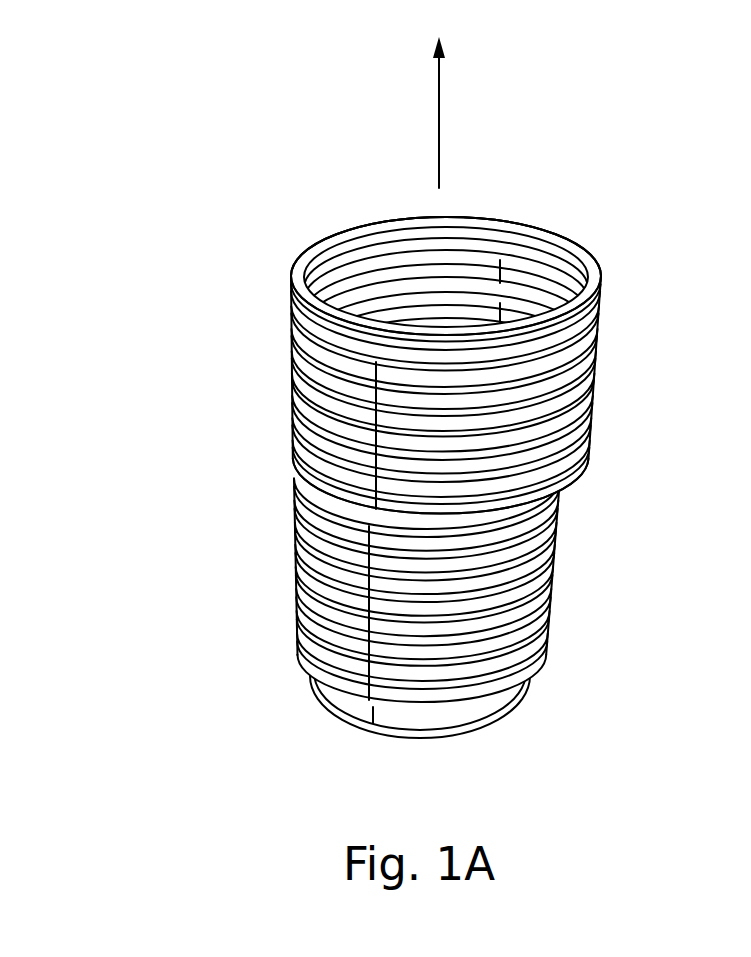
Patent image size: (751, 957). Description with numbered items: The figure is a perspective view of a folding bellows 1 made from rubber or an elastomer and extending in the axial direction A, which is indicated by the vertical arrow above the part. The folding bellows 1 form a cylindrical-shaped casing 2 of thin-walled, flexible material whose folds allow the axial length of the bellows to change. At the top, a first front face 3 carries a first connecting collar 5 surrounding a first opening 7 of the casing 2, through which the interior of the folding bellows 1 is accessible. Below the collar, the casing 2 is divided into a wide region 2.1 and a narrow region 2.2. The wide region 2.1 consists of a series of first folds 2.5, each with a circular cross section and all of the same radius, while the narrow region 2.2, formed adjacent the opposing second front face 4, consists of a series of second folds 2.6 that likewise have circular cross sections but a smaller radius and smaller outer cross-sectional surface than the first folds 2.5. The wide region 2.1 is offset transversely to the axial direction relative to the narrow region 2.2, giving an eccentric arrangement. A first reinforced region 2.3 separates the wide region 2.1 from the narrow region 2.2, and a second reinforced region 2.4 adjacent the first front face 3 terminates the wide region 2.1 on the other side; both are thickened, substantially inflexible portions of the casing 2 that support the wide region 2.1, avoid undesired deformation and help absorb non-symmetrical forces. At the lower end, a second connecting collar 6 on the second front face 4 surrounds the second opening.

The folding bellows 1 is at (439, 426).
The casing 2 is at (439, 516).
The wide region 2.1 is at (441, 368).
The narrow region 2.2 is at (417, 591).
The first reinforced region 2.3 is at (587, 484).
The second reinforced region 2.4 is at (592, 309).
The first folds 2.5 is at (610, 393).
The second folds 2.6 is at (565, 582).
The first front face 3 is at (375, 190).
The second front face 4 is at (388, 750).
The first connecting collar 5 is at (311, 254).
The second connecting collar 6 is at (525, 705).
The first opening 7 is at (460, 262).